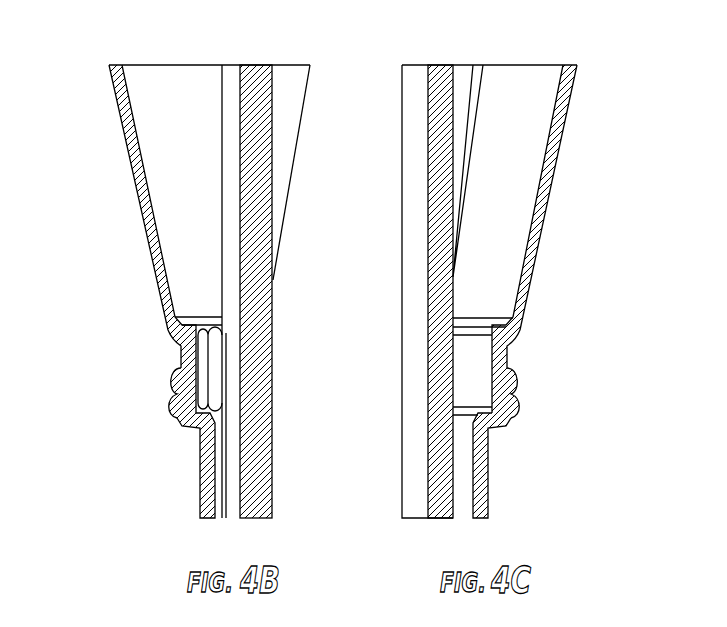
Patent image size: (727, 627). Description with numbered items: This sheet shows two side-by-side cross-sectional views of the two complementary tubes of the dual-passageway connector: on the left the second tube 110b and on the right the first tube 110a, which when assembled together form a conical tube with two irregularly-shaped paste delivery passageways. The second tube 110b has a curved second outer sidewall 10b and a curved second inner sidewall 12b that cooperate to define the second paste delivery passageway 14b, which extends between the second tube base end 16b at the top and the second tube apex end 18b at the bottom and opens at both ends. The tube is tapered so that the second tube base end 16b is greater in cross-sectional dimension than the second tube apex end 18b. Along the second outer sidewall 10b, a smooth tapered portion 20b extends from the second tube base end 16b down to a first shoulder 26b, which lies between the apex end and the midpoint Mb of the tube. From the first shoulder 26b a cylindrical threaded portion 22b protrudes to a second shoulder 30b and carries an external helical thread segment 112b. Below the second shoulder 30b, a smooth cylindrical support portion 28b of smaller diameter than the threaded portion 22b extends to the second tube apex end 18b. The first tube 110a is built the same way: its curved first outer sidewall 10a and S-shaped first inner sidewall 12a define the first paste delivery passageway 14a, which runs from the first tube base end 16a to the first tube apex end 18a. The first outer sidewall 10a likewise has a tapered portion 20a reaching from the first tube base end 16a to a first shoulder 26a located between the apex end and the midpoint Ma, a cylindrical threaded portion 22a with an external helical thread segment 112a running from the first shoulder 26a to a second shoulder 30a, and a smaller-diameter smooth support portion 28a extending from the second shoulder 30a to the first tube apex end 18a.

In FIG. 4B, the second outer sidewall 10b is at (148, 265).
In FIG. 4B, the second inner sidewall 12b is at (274, 330).
In FIG. 4B, the second paste delivery passageway 14b is at (201, 157).
In FIG. 4B, the second tube base end 16b is at (115, 65).
In FIG. 4B, the second tube apex end 18b is at (200, 519).
In FIG. 4B, the tapered portion 20b is at (68, 65).
In FIG. 4B, the threaded portion 22b is at (68, 337).
In FIG. 4B, the first shoulder 26b is at (167, 337).
In FIG. 4B, the support portion 28b is at (68, 428).
In FIG. 4B, the second shoulder 30b is at (196, 428).
In FIG. 4B, the second tube 110b is at (274, 48).
In FIG. 4B, the external helical thread segment 112b is at (172, 410).
In FIG. 4B, the midpoint Mb is at (262, 280).
In FIG. 4C, the first outer sidewall 10a is at (528, 317).
In FIG. 4C, the first inner sidewall 12a is at (402, 380).
In FIG. 4C, the first paste delivery passageway 14a is at (528, 157).
In FIG. 4C, the first tube base end 16a is at (577, 65).
In FIG. 4C, the first tube apex end 18a is at (468, 522).
In FIG. 4C, the tapered portion 20a is at (620, 65).
In FIG. 4C, the threaded portion 22a is at (620, 336).
In FIG. 4C, the first shoulder 26a is at (520, 343).
In FIG. 4C, the support portion 28a is at (620, 418).
In FIG. 4C, the second shoulder 30a is at (497, 430).
In FIG. 4C, the first tube 110a is at (541, 48).
In FIG. 4C, the external helical thread segment 112a is at (526, 410).
In FIG. 4C, the midpoint Ma is at (447, 275).